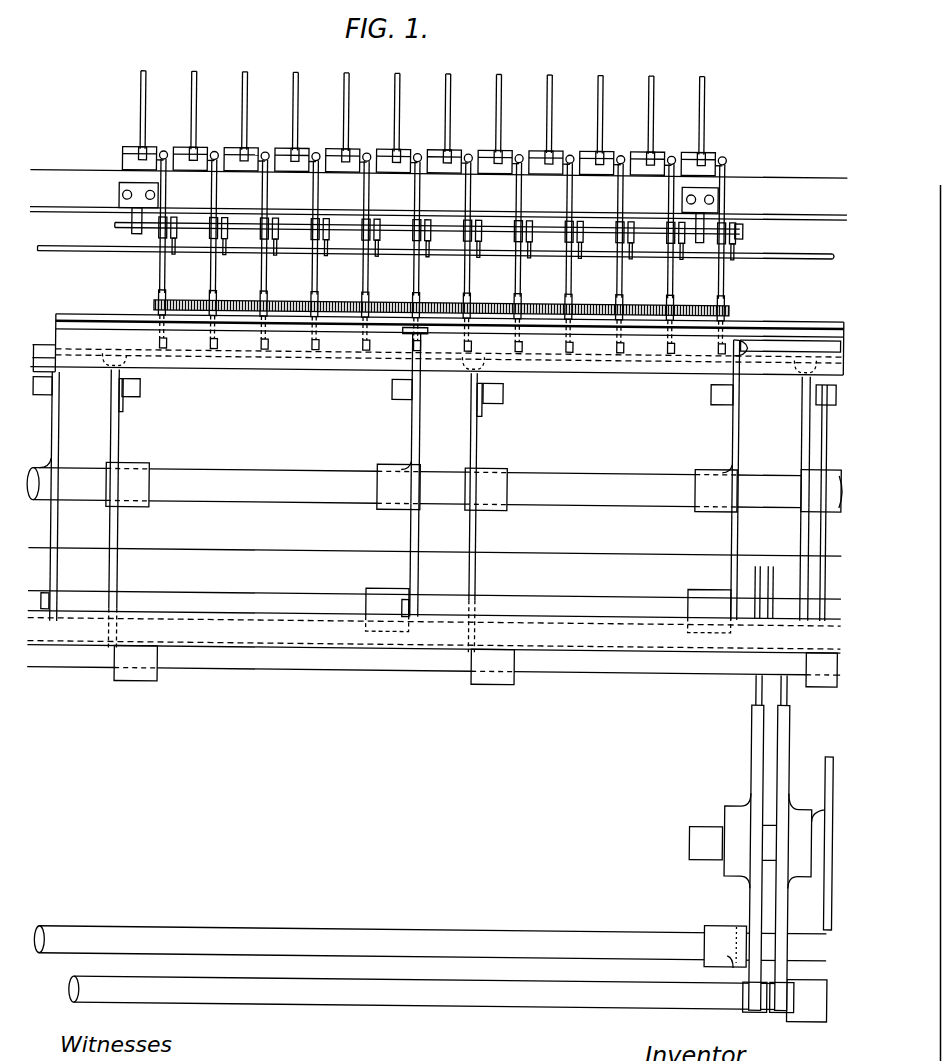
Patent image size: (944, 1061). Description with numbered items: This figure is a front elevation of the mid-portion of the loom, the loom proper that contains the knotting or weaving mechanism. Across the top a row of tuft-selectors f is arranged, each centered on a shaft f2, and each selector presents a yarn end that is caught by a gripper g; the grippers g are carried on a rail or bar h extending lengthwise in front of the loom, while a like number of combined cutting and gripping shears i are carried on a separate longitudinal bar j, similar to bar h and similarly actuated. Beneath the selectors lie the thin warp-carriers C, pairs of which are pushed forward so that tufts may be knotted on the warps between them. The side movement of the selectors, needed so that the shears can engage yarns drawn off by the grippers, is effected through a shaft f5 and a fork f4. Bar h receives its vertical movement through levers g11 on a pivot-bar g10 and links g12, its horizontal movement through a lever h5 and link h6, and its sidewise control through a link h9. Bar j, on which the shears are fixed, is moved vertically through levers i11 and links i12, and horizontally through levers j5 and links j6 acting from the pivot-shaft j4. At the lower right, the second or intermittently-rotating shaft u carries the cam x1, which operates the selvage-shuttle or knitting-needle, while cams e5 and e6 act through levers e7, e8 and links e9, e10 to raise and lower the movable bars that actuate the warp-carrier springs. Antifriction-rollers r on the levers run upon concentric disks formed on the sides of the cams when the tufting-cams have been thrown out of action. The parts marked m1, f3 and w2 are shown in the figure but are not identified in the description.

The needle rods m1 is at (293, 152).
The guide block f3 is at (216, 180).
The shaft f2 is at (117, 227).
The fork f4 is at (225, 243).
The shaft f5 is at (118, 253).
The tuft-selector f is at (154, 293).
The gripper g is at (278, 302).
The warp-carrier C is at (183, 303).
The bar h is at (247, 359).
The bar j is at (351, 322).
The shears i is at (202, 348).
The link h9 is at (790, 337).
The pivot-shaft j4 is at (434, 488).
The lever j5 is at (54, 432).
The link j6 is at (60, 396).
The lever h5 is at (143, 461).
The link h6 is at (123, 401).
The link g12 is at (412, 533).
The link i12 is at (120, 547).
The shaft w2 is at (221, 557).
The pivot-bar g10 is at (612, 603).
The lever g11 is at (539, 599).
The lever i11 is at (122, 655).
The link e10 is at (756, 690).
The link e9 is at (787, 690).
The second shaft u is at (705, 843).
The lever e8 is at (725, 947).
The lever e7 is at (807, 1001).
The cam e5 is at (757, 759).
The cam e6 is at (784, 761).
The cam x1 is at (826, 898).
The antifriction-roller r is at (748, 992).